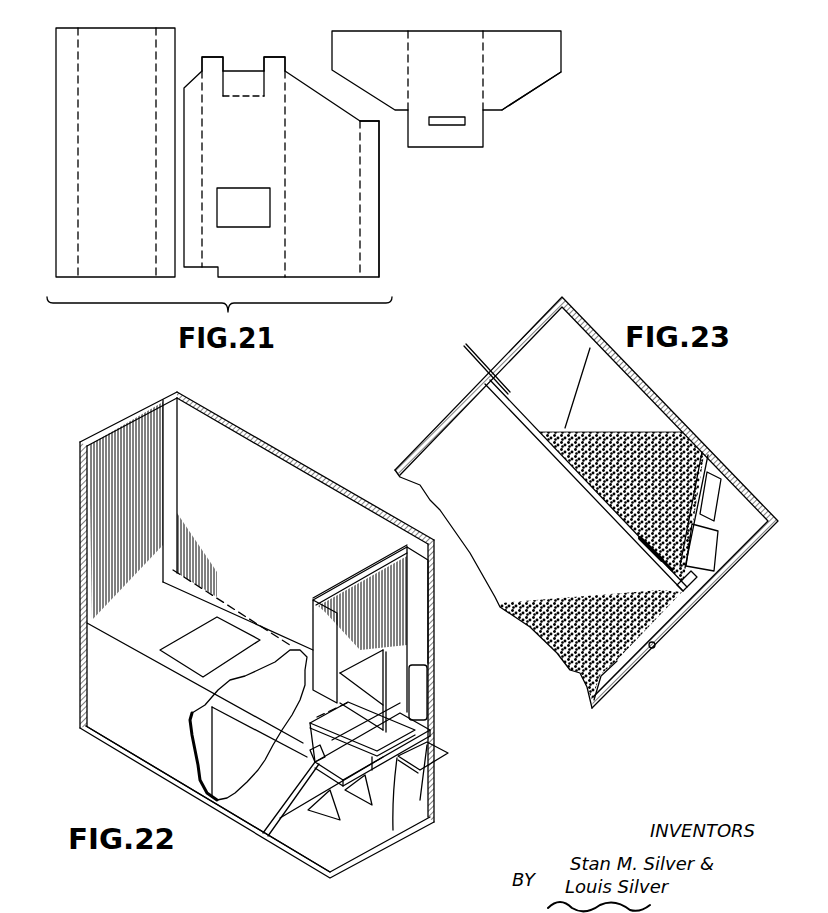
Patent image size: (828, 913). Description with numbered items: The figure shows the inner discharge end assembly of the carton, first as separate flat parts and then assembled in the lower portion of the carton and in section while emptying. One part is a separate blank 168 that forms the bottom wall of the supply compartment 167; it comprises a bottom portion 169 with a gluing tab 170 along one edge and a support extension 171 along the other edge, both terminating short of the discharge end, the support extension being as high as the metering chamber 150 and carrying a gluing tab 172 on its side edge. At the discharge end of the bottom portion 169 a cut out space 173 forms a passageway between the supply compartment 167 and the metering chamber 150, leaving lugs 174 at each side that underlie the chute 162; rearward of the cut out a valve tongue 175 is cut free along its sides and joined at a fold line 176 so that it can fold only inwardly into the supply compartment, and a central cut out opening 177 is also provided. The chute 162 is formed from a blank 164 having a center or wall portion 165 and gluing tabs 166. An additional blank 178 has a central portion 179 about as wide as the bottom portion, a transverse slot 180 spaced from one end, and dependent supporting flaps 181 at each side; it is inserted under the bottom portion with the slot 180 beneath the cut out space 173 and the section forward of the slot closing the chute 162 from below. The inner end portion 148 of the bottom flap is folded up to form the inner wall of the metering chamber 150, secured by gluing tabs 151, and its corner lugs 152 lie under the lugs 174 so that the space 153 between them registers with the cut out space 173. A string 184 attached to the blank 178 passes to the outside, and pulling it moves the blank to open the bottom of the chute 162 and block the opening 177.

In FIG. 23, the inner end portion 148 is at (708, 477).
In FIG. 22, the inner end portion 148 is at (393, 830).
In FIG. 23, the metering chamber 150 is at (738, 483).
In FIG. 22, the metering chamber 150 is at (422, 795).
In FIG. 22, the gluing tab 151 is at (308, 832).
In FIG. 23, the corner lugs 152 is at (700, 578).
In FIG. 22, the corner lugs 152 is at (448, 753).
In FIG. 22, the space 153 is at (412, 773).
In FIG. 23, the chute 162 is at (655, 647).
In FIG. 22, the chute 162 is at (413, 582).
In FIG. 21, the blank 164 is at (103, 192).
In FIG. 22, the blank 164 is at (360, 639).
In FIG. 21, the center or wall portion 165 is at (116, 270).
In FIG. 23, the center or wall portion 165 is at (613, 683).
In FIG. 22, the center or wall portion 165 is at (378, 560).
In FIG. 21, the gluing tabs 166 is at (60, 141).
In FIG. 22, the gluing tabs 166 is at (318, 618).
In FIG. 23, the supply compartment 167 is at (462, 408).
In FIG. 22, the supply compartment 167 is at (242, 450).
In FIG. 21, the blank 168 is at (338, 230).
In FIG. 21, the bottom portion 169 is at (252, 270).
In FIG. 23, the bottom portion 169 is at (607, 508).
In FIG. 22, the bottom portion 169 is at (118, 624).
In FIG. 21, the gluing tab 170 is at (192, 268).
In FIG. 21, the support extension 171 is at (348, 161).
In FIG. 22, the support extension 171 is at (247, 808).
In FIG. 21, the gluing tab 172 is at (370, 260).
In FIG. 22, the gluing tab 172 is at (283, 840).
In FIG. 21, the cut out space 173 is at (257, 63).
In FIG. 22, the cut out space 173 is at (313, 767).
In FIG. 21, the lugs 174 is at (210, 56).
In FIG. 23, the lugs 174 is at (695, 598).
In FIG. 22, the lugs 174 is at (315, 764).
In FIG. 21, the valve tongue 175 is at (242, 78).
In FIG. 23, the valve tongue 175 is at (652, 563).
In FIG. 22, the valve tongue 175 is at (317, 755).
In FIG. 21, the fold line 176 is at (250, 100).
In FIG. 23, the fold line 176 is at (650, 555).
In FIG. 22, the fold line 176 is at (315, 718).
In FIG. 21, the central cut out opening 177 is at (268, 203).
In FIG. 23, the central cut out opening 177 is at (543, 438).
In FIG. 22, the central cut out opening 177 is at (180, 642).
In FIG. 21, the blank 178 is at (475, 28).
In FIG. 21, the central portion 179 is at (437, 38).
In FIG. 23, the central portion 179 is at (523, 410).
In FIG. 22, the central portion 179 is at (240, 708).
In FIG. 21, the transverse slot 180 is at (453, 123).
In FIG. 22, the transverse slot 180 is at (372, 757).
In FIG. 21, the supporting flaps 181 is at (553, 48).
In FIG. 22, the supporting flaps 181 is at (218, 770).
In FIG. 23, the string 184 is at (494, 328).